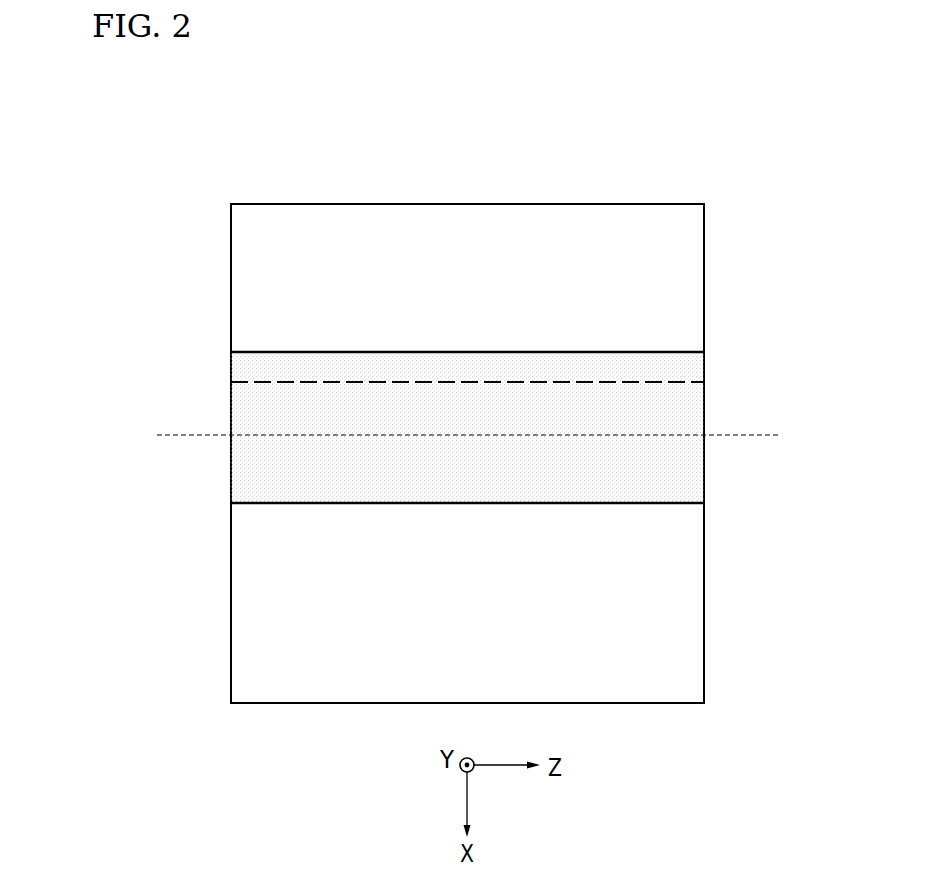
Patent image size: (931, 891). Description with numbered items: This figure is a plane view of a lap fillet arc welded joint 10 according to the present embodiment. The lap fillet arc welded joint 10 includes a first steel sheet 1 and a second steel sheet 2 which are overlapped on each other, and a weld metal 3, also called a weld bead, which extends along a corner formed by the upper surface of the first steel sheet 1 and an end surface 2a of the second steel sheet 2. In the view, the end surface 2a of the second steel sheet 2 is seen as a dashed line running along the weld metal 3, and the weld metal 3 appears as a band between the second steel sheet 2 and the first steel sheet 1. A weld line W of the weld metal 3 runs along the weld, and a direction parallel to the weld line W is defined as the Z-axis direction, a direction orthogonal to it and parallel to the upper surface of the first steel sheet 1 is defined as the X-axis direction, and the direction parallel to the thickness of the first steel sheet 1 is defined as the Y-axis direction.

The lap fillet arc welded joint 10 is at (477, 156).
The first steel sheet 1 is at (704, 598).
The second steel sheet 2 is at (704, 296).
The end surface of the second steel sheet 2a is at (663, 384).
The weld metal 3 is at (260, 352).
The weld line W is at (183, 434).